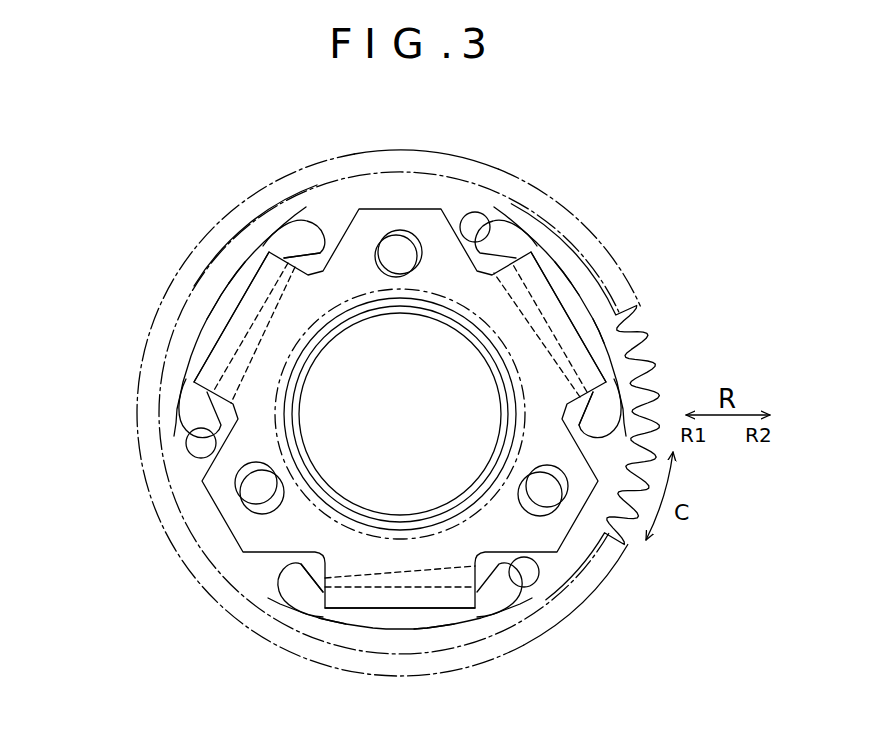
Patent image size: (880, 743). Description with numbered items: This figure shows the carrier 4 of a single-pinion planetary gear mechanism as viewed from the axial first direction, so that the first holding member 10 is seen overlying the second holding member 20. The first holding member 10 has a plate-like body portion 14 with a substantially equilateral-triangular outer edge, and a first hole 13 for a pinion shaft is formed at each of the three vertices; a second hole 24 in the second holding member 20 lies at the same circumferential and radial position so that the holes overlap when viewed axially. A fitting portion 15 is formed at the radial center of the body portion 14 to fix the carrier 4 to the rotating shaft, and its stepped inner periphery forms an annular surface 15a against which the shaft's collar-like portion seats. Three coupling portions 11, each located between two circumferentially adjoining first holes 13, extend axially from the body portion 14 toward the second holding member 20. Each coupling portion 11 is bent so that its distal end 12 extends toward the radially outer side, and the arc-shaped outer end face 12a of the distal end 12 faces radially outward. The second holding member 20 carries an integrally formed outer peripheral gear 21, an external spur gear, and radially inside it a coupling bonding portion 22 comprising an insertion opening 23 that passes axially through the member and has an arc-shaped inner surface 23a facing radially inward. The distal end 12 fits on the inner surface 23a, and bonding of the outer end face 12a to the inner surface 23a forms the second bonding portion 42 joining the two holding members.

The carrier 4 is at (237, 178).
The first holding member 10 is at (436, 208).
The coupling portion 11 is at (548, 270).
The distal end 12 is at (582, 308).
The outer end face 12a is at (565, 273).
The first hole 13 is at (393, 231).
The body portion 14 is at (186, 450).
The fitting portion 15 is at (353, 310).
The annular surface 15a is at (399, 313).
The second holding member 20 is at (551, 633).
The outer peripheral gear 21 is at (657, 386).
The coupling bonding portion 22 is at (400, 425).
The insertion opening 23 is at (522, 243).
The inner surface 23a is at (598, 343).
The second hole 24 is at (401, 371).
The second bonding portion 42 is at (602, 328).